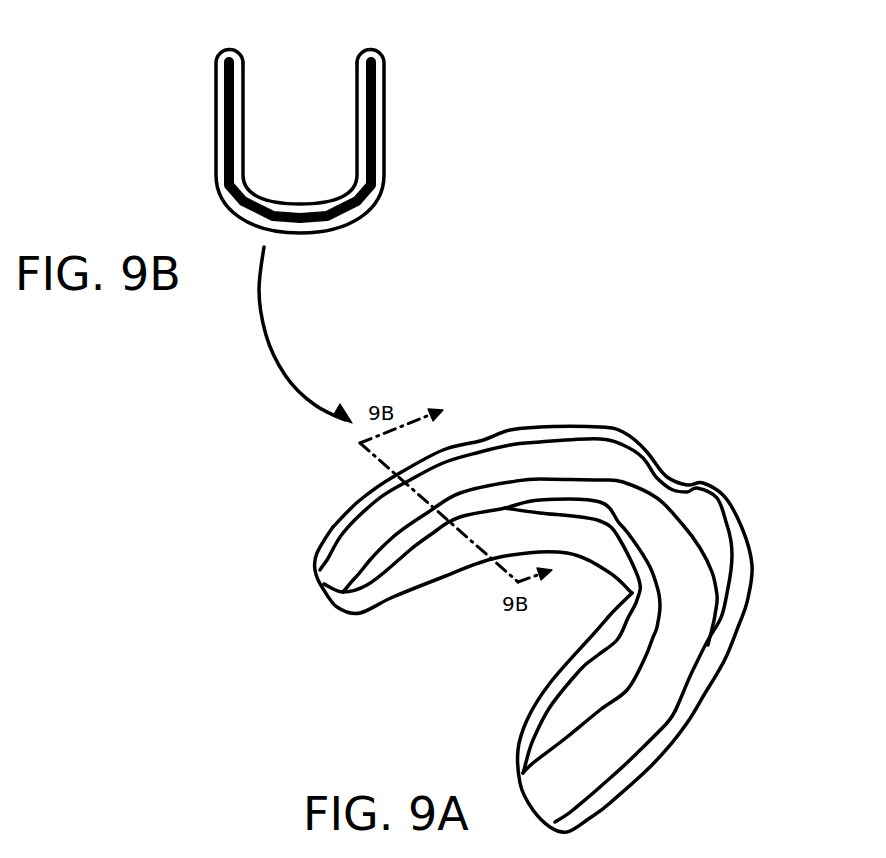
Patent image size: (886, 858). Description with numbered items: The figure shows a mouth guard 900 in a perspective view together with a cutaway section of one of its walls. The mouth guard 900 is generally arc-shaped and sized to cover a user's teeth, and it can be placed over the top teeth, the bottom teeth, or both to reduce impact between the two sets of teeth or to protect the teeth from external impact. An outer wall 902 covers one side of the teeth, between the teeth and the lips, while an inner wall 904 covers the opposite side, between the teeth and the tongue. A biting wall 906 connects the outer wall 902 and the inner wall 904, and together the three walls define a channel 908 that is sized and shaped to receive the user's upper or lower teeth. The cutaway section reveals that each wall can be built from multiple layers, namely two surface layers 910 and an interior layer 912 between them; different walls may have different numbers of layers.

In FIG. 9A, the mouth guard 900 is at (705, 397).
In FIG. 9A, the outer wall 902 is at (730, 604).
In FIG. 9A, the inner wall 904 is at (597, 527).
In FIG. 9A, the biting wall 906 is at (347, 612).
In FIG. 9B, the channel 908 is at (343, 182).
In FIG. 9B, the surface layers 910 is at (215, 88).
In FIG. 9B, the interior layer 912 is at (383, 173).